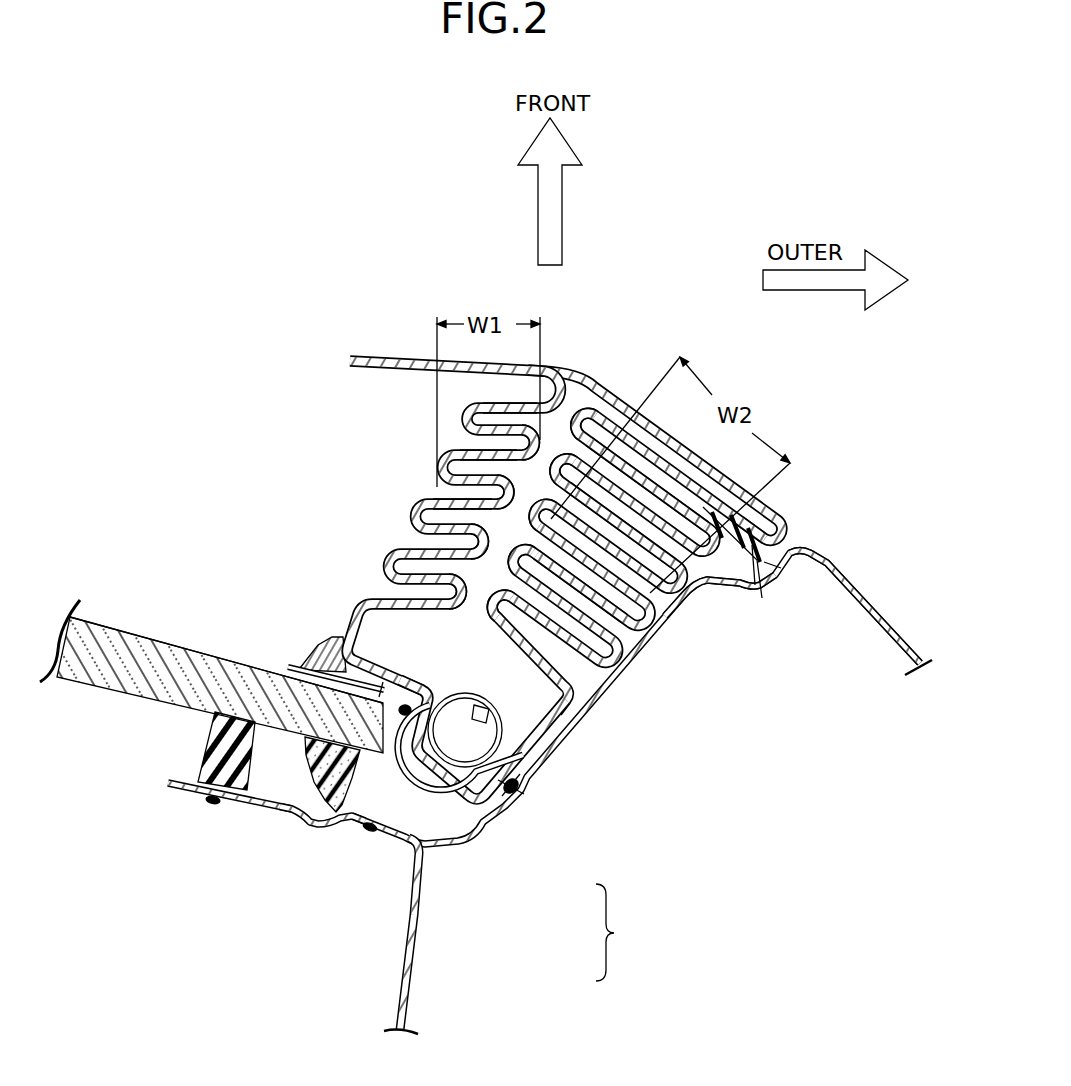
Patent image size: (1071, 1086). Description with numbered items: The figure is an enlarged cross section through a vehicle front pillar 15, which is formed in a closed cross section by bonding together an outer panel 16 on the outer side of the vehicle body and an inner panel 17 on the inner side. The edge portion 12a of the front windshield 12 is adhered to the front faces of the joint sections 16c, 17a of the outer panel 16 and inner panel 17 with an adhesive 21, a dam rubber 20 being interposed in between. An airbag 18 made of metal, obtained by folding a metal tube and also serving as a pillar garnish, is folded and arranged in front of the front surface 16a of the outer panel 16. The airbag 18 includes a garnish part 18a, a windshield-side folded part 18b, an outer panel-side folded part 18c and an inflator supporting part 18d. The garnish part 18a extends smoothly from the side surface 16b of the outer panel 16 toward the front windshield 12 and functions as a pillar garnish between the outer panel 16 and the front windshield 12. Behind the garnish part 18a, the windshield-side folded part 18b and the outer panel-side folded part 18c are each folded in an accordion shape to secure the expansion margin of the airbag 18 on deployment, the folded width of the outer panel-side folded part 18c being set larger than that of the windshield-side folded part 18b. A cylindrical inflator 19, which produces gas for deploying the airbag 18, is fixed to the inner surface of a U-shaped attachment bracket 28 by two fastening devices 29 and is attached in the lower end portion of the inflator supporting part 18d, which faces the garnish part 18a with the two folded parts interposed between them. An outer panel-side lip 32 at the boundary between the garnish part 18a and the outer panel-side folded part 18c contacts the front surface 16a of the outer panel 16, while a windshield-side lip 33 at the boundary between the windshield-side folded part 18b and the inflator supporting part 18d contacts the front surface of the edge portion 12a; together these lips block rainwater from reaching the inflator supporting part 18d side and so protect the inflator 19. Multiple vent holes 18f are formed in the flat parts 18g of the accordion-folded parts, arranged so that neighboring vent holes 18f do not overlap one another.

The front windshield 12 is at (128, 624).
The edge portion 12a is at (232, 668).
The windshield-side lip 33 is at (335, 658).
The dam rubber 20 is at (213, 752).
The adhesive 21 is at (346, 790).
The front pillar 15 is at (550, 786).
The outer panel 16 is at (550, 726).
The front surface 16a is at (688, 595).
The side surface 16b is at (850, 582).
The joint section 16c is at (316, 818).
The inner panel 17 is at (415, 1003).
The joint section 17a is at (266, 805).
The airbag 18 is at (553, 564).
The garnish part 18a is at (591, 378).
The windshield-side folded part 18b is at (418, 500).
The outer panel-side folded part 18c is at (640, 647).
The inflator supporting part 18d is at (438, 758).
The vent holes 18f is at (487, 453).
The flat parts 18g is at (609, 498).
The inflator 19 is at (460, 705).
The fastening devices 29 is at (498, 737).
The attachment bracket 28 is at (510, 796).
The outer panel-side lip 32 is at (757, 570).